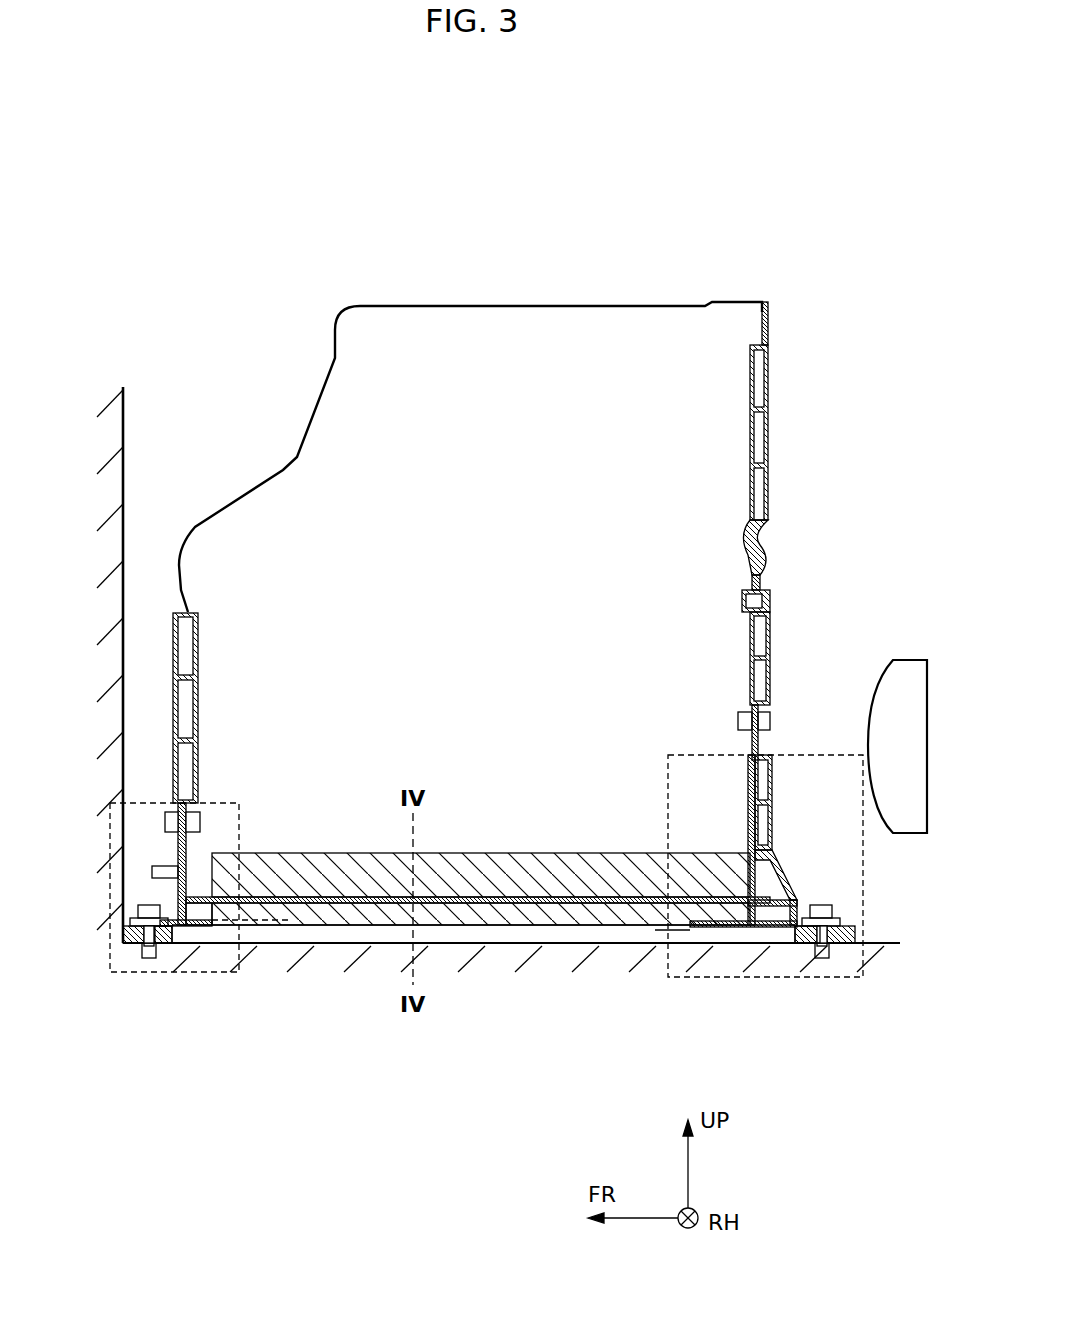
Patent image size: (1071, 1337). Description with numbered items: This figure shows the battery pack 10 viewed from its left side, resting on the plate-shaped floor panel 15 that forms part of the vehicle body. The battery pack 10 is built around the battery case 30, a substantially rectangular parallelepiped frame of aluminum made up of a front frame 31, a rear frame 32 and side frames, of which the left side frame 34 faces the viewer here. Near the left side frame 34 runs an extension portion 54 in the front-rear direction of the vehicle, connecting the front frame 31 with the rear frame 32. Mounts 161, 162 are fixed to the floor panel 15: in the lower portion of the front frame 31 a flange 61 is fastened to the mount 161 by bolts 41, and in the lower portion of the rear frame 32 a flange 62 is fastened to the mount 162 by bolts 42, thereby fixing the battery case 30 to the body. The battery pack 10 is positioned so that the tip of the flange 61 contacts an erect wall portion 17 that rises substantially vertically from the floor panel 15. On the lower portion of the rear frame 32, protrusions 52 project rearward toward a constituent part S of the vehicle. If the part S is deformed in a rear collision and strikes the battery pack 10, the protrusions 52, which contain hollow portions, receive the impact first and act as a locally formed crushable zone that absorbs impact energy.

The battery pack 10 is at (730, 212).
The floor panel 15 is at (887, 943).
The erect wall portion 17 is at (108, 467).
The battery case 30 is at (770, 400).
The front frame 31 is at (176, 660).
The rear frame 32 is at (772, 605).
The left side frame 34 is at (515, 862).
The bolts 41 is at (143, 905).
The bolts 42 is at (818, 905).
The protrusions 52 is at (776, 870).
The extension portion 54 is at (520, 905).
The flange 61 is at (165, 946).
The flange 62 is at (840, 925).
The mount 161 is at (125, 938).
The mount 162 is at (790, 946).
The constituent part of the vehicle S is at (904, 668).